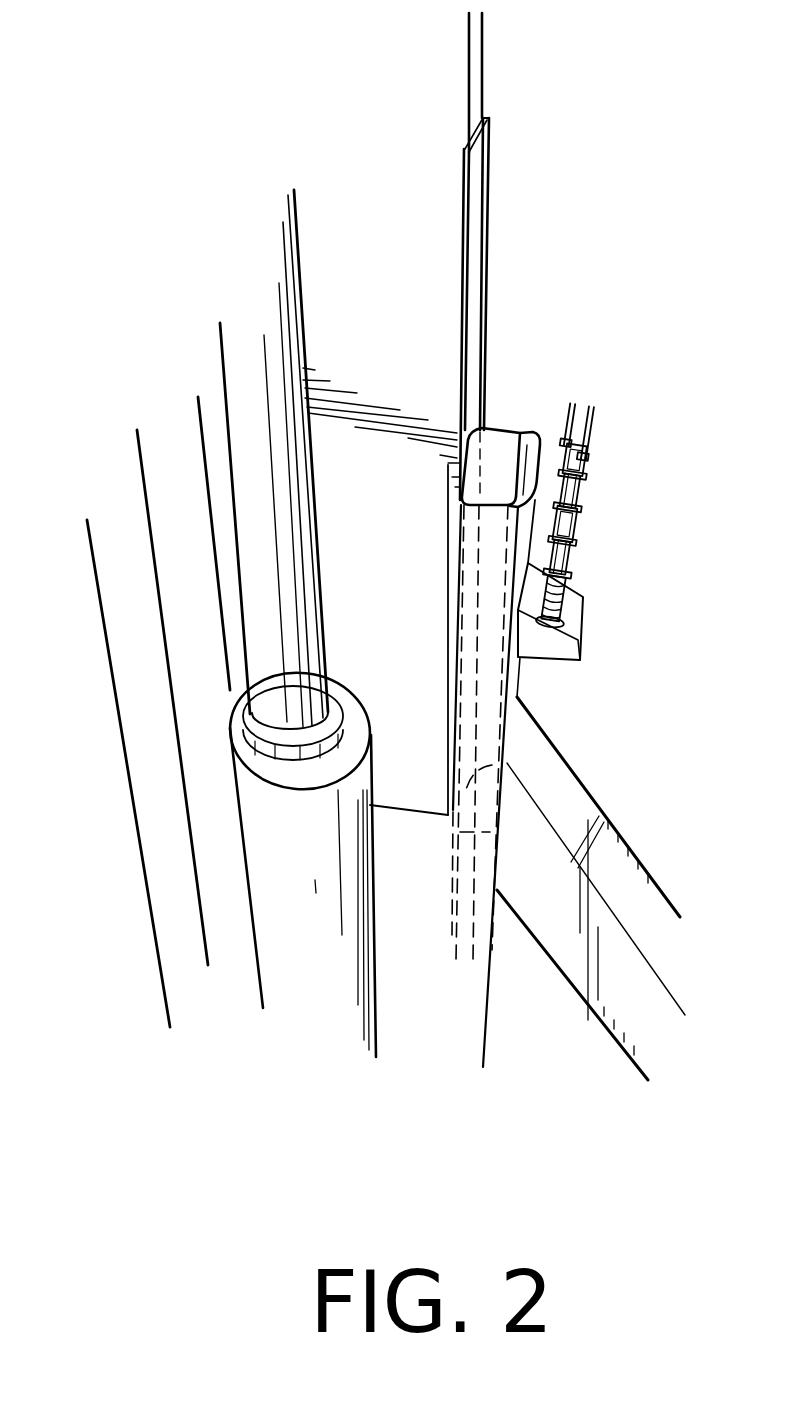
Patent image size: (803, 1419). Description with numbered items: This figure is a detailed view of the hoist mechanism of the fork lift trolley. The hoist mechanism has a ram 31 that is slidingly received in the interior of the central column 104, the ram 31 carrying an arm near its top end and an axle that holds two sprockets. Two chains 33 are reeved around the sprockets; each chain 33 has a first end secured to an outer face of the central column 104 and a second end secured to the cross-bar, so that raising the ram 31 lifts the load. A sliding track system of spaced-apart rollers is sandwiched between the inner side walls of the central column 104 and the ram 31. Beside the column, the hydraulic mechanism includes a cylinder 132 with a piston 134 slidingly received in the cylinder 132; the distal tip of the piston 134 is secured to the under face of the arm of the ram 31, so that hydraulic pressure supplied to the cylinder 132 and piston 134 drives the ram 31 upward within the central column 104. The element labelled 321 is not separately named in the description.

The ram 31 is at (448, 193).
The chain 33 is at (583, 492).
The central column 104 is at (520, 688).
The cylinder 132 is at (352, 978).
The piston 134 is at (275, 310).
The sliding clip 321 is at (505, 440).